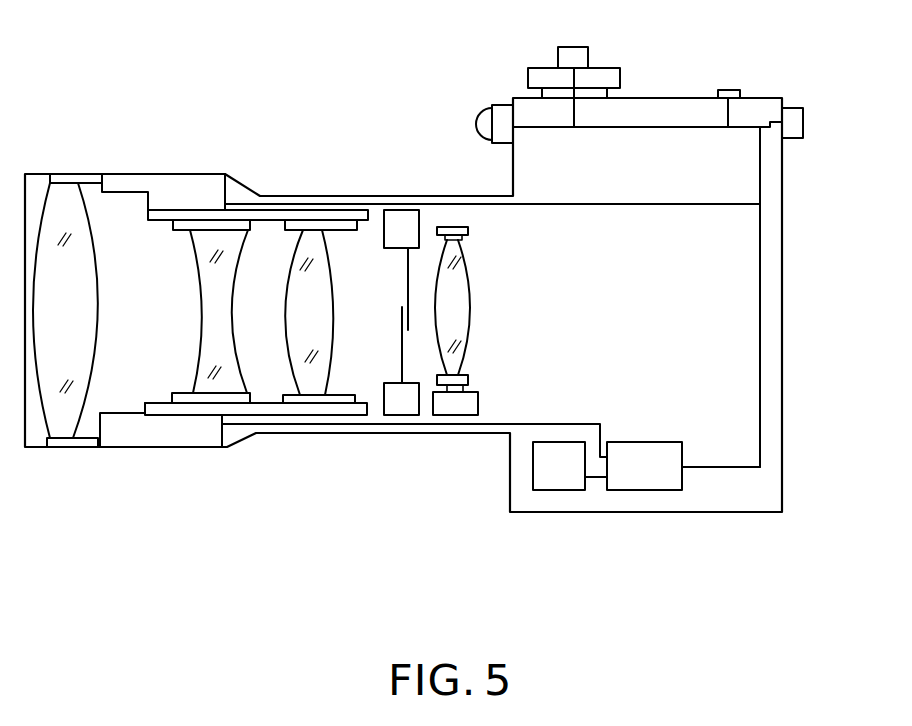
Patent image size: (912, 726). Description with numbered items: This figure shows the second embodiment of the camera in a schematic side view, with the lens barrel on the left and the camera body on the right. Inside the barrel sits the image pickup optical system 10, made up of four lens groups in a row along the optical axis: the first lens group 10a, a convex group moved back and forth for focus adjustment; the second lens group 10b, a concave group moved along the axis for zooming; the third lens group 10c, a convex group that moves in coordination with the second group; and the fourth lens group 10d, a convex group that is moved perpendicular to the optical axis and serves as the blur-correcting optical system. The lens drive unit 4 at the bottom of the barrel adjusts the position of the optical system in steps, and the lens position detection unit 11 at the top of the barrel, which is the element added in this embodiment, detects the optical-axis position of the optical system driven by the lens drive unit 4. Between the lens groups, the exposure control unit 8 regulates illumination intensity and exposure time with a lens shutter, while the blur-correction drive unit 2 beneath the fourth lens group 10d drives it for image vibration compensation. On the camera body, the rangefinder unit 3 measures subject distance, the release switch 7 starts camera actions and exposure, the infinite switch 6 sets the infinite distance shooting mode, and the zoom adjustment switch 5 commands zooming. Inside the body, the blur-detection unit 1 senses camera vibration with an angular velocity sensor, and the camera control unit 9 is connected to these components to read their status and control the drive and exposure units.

The blur-detection unit 1 is at (557, 475).
The blur-correction drive unit 2 is at (455, 405).
The rangefinder unit 3 is at (502, 112).
The lens drive unit 4 is at (153, 437).
The zoom adjustment switch 5 is at (790, 117).
The infinite switch 6 is at (728, 90).
The release switch 7 is at (565, 58).
The exposure control unit 8 is at (405, 400).
The camera control unit 9 is at (643, 472).
The image pickup optical system 10 is at (818, 380).
The first lens group 10a is at (67, 200).
The second lens group 10b is at (215, 243).
The third lens group 10c is at (313, 238).
The fourth lens group 10d is at (457, 240).
The lens position detection unit 11 is at (167, 188).